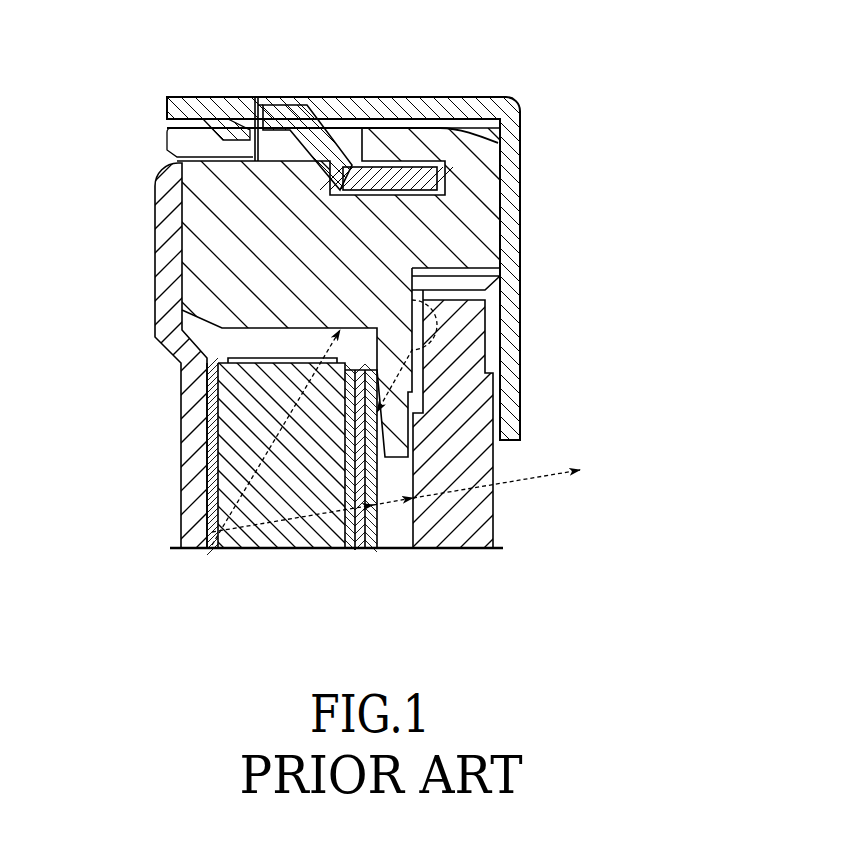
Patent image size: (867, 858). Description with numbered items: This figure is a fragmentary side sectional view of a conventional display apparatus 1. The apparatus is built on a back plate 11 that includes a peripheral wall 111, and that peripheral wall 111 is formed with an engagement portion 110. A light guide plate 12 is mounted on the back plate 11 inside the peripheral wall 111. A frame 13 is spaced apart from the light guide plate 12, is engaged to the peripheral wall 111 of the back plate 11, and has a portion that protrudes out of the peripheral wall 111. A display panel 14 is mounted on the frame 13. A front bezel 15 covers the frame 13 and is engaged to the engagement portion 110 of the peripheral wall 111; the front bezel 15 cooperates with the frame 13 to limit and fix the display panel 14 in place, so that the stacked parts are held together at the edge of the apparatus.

The display apparatus 1 is at (572, 381).
The back plate 11 is at (153, 180).
The engagement portion 110 is at (295, 98).
The peripheral wall 111 is at (390, 170).
The light guide plate 12 is at (295, 547).
The frame 13 is at (483, 199).
The display panel 14 is at (473, 505).
The front bezel 15 is at (523, 240).